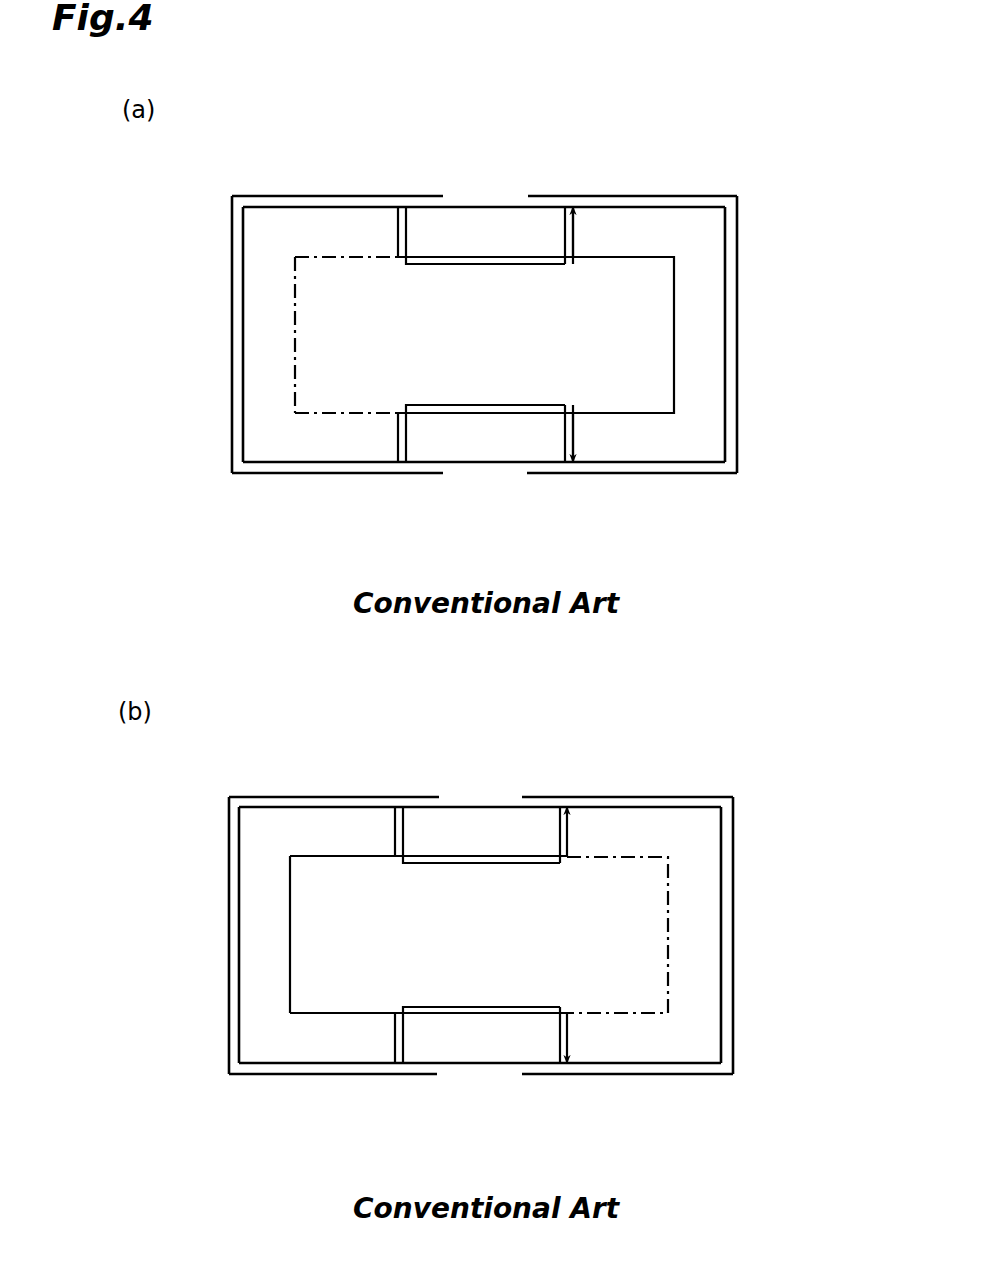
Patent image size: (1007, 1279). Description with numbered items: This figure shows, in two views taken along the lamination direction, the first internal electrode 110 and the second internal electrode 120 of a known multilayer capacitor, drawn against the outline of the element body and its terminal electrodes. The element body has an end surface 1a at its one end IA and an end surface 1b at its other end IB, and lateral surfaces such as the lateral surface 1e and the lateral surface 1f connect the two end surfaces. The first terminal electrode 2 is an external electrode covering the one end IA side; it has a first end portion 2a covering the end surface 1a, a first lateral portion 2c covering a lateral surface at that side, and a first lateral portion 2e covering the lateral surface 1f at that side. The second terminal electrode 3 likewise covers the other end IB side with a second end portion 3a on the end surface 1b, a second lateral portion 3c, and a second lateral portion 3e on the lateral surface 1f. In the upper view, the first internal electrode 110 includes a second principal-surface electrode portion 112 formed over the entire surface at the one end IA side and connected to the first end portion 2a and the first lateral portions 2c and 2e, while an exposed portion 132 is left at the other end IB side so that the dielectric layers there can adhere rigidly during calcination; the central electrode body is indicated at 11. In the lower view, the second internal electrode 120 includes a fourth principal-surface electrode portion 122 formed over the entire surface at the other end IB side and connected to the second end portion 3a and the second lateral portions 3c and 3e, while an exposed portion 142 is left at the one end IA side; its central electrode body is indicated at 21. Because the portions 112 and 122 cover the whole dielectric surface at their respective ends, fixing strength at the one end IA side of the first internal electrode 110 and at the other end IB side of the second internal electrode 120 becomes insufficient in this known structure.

The first terminal electrode 2 is at (286, 638).
The second terminal electrode 3 is at (682, 640).
The first end portion 2a is at (232, 367).
The first lateral portion 2c is at (340, 469).
The first lateral portion 2e is at (336, 205).
The second end portion 3a is at (737, 365).
The second lateral portion 3c is at (625, 464).
The second lateral portion 3e is at (630, 205).
The end surface 1a is at (243, 421).
The end surface 1b is at (725, 420).
The lateral surface 1e is at (482, 464).
The lateral surface 1f is at (495, 206).
The one end IA is at (179, 635).
The other end IB is at (785, 635).
The internal electrode 11 is at (491, 311).
The first internal electrode 110 is at (666, 250).
The second principal-surface electrode portion 112 is at (334, 321).
The exposed portion 132 is at (707, 334).
The internal electrode 21 is at (486, 911).
The second internal electrode 120 is at (349, 851).
The fourth principal-surface electrode portion 122 is at (623, 921).
The exposed portion 142 is at (268, 942).